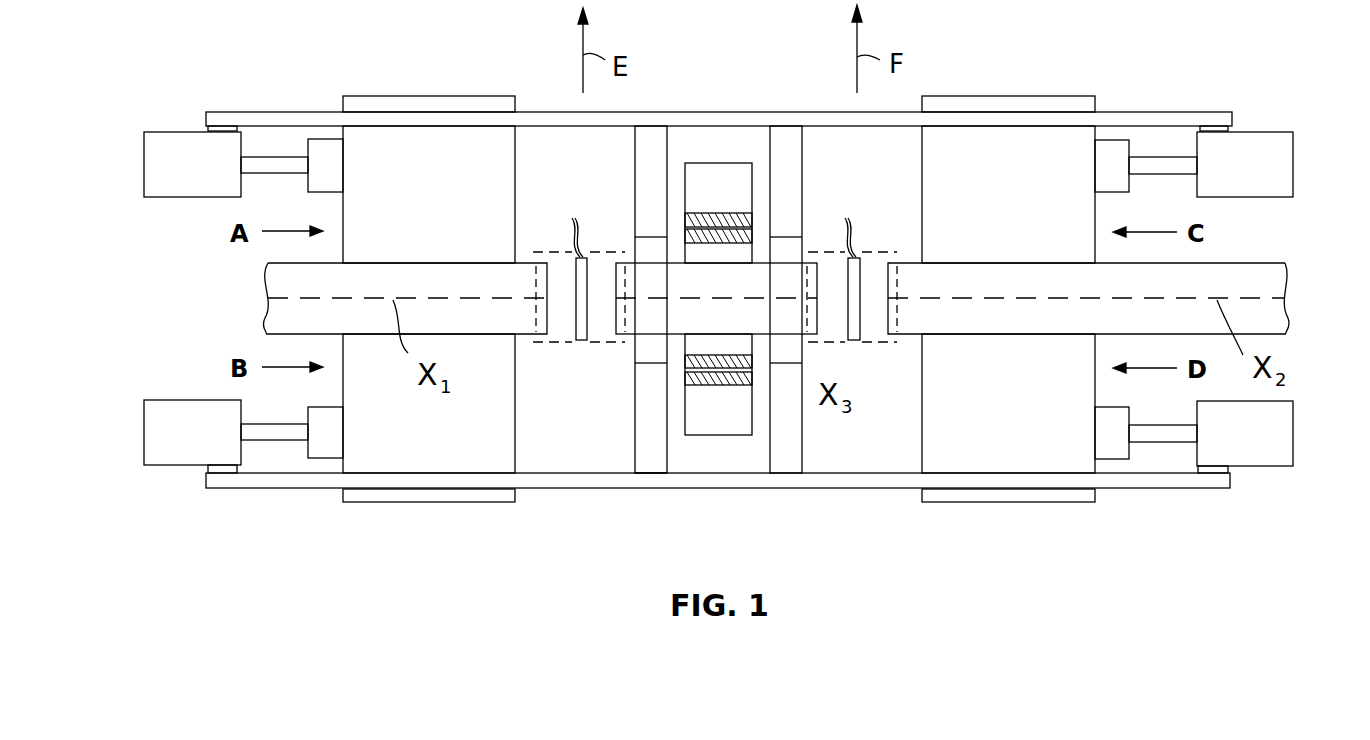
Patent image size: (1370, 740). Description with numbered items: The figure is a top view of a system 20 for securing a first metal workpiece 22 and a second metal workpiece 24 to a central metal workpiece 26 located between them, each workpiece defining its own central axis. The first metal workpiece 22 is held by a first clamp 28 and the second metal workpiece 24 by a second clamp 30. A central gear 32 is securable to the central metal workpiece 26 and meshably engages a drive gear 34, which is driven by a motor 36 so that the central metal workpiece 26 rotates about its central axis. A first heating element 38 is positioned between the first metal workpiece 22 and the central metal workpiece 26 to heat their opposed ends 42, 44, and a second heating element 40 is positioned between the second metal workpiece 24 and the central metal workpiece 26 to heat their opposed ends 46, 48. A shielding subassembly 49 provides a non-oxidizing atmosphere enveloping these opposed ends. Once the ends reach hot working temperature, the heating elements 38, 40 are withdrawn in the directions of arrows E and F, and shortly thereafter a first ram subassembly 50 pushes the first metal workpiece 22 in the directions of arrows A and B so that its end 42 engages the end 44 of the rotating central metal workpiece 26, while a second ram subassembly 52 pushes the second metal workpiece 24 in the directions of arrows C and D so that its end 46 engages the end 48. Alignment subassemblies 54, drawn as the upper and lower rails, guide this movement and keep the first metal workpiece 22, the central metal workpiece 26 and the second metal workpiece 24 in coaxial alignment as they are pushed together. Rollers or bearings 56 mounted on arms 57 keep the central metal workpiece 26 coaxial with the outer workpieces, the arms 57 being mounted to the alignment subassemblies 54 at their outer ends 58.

The system 20 is at (1165, 61).
The first metal workpiece 22 is at (265, 272).
The second metal workpiece 24 is at (1268, 277).
The central metal workpiece 26 is at (757, 325).
The first clamp 28 is at (455, 435).
The second clamp 30 is at (1035, 435).
The central gear 32 is at (693, 247).
The drive gear 34 is at (686, 222).
The motor 36 is at (712, 173).
The first heating element 38 is at (578, 282).
The second heating element 40 is at (852, 317).
The end of the first metal workpiece 42 is at (535, 280).
The end of the central metal workpiece 44 is at (618, 315).
The end of the second metal workpiece 46 is at (902, 273).
The end of the central metal workpiece 48 is at (808, 282).
The shielding subassembly 49 is at (545, 343).
The first ram subassembly 50 is at (152, 427).
The second ram subassembly 52 is at (1292, 162).
The alignment subassembly 54 is at (318, 108).
The rollers or bearings 56 is at (645, 350).
The arms 57 is at (648, 460).
The outer ends of the arms 58 is at (798, 464).